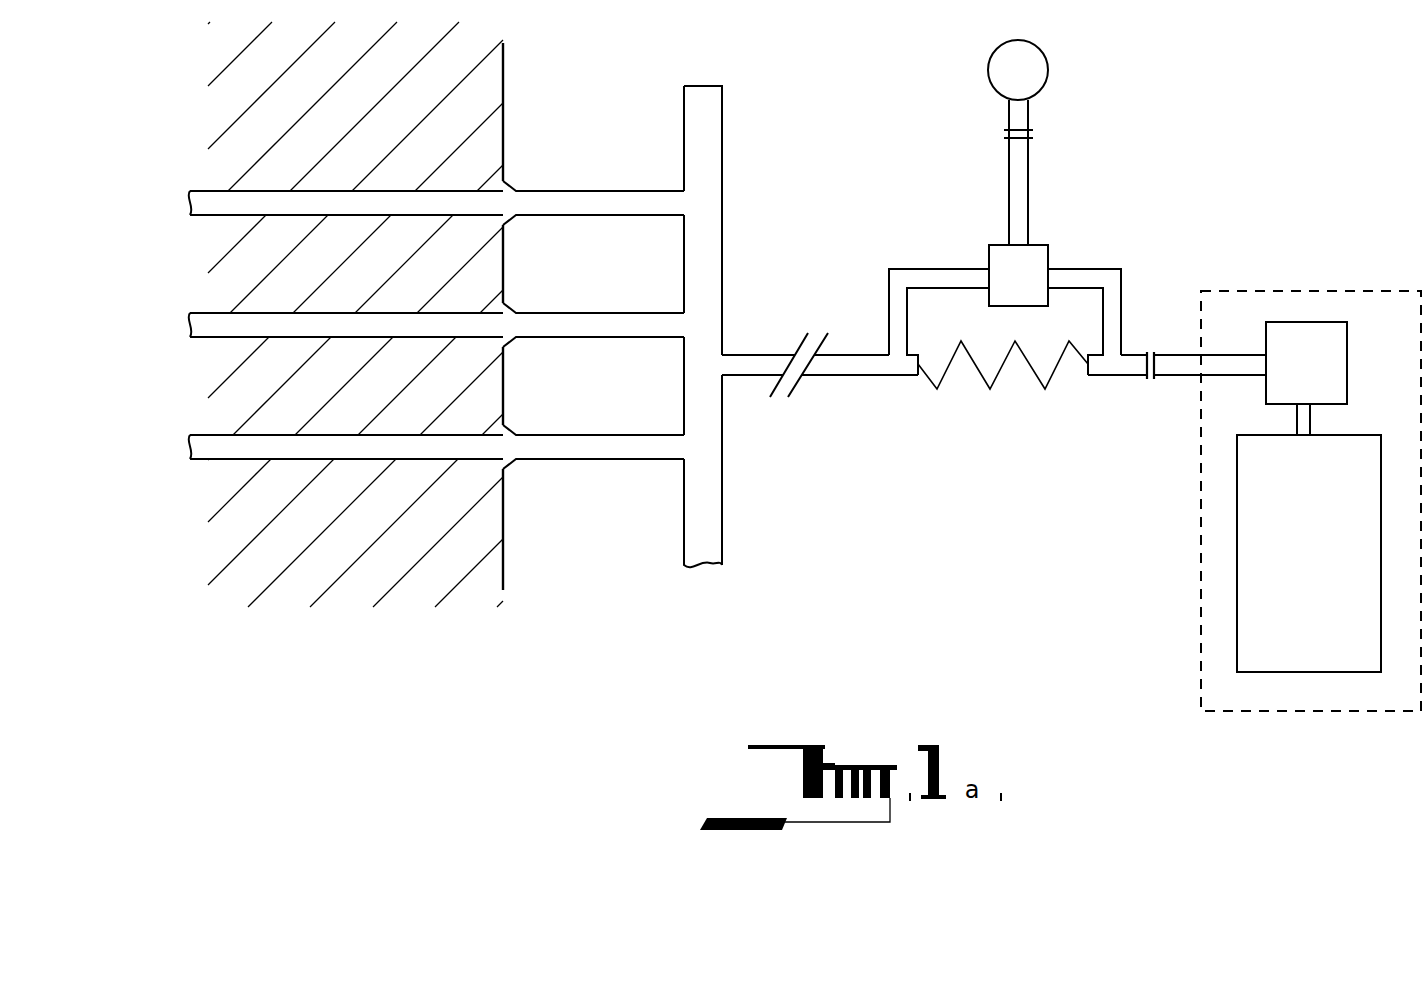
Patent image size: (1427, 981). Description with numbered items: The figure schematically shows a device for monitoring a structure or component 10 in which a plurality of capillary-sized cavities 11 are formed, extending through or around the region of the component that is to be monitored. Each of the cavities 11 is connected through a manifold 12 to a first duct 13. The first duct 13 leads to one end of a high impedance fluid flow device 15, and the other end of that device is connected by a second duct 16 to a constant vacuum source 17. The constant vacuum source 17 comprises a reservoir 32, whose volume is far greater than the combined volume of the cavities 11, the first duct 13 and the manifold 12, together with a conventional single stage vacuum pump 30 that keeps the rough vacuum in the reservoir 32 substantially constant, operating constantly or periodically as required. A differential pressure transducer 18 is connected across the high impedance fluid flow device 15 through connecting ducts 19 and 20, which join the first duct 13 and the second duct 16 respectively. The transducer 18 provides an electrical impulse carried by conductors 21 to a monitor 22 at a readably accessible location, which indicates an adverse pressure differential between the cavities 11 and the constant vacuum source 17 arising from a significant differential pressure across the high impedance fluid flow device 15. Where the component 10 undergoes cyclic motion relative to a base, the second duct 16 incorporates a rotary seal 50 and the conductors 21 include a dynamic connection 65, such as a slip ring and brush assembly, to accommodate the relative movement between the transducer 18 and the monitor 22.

The component 10 is at (330, 573).
The cavities 11 is at (222, 207).
The manifold 12 is at (717, 203).
The first duct 13 is at (770, 352).
The high impedance fluid flow device 15 is at (993, 398).
The second duct 16 is at (1128, 356).
The constant vacuum source 17 is at (1370, 291).
The differential pressure transducer 18 is at (1009, 294).
The connecting duct 19 is at (920, 268).
The connecting duct 20 is at (1100, 268).
The conductors 21 is at (1028, 160).
The monitor 22 is at (1045, 50).
The vacuum pump 30 is at (1300, 391).
The reservoir 32 is at (1311, 563).
The rotary seal 50 is at (1150, 380).
The dynamic connection 65 is at (1005, 130).